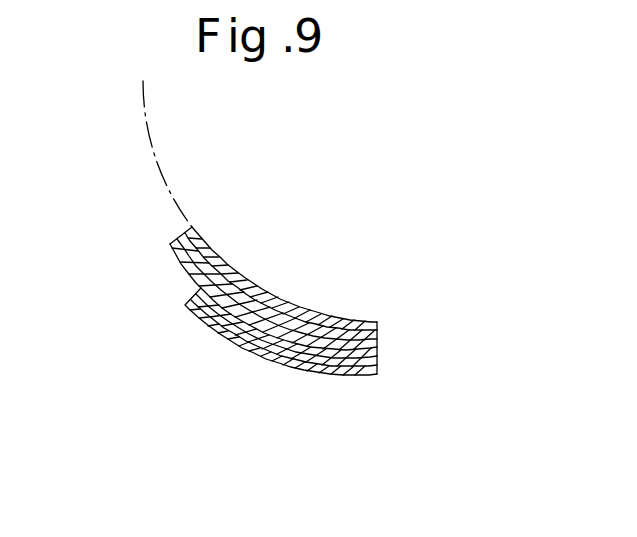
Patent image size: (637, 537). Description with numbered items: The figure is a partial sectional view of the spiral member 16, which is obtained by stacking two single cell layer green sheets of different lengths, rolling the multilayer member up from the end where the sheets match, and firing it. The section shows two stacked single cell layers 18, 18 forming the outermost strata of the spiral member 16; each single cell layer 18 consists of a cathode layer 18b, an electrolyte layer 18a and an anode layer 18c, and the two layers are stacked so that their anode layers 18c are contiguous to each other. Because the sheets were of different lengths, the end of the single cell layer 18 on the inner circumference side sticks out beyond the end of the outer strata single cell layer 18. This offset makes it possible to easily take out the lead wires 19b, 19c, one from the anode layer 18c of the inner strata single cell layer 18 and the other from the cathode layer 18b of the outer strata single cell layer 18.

The spiral member 16 is at (226, 422).
The single cell layer 18 is at (353, 198).
The electrolyte layer 18a is at (256, 302).
The cathode layer 18b is at (245, 280).
The anode layer 18c is at (275, 316).
The lead wire 19b is at (198, 304).
The lead wire 19c is at (195, 255).